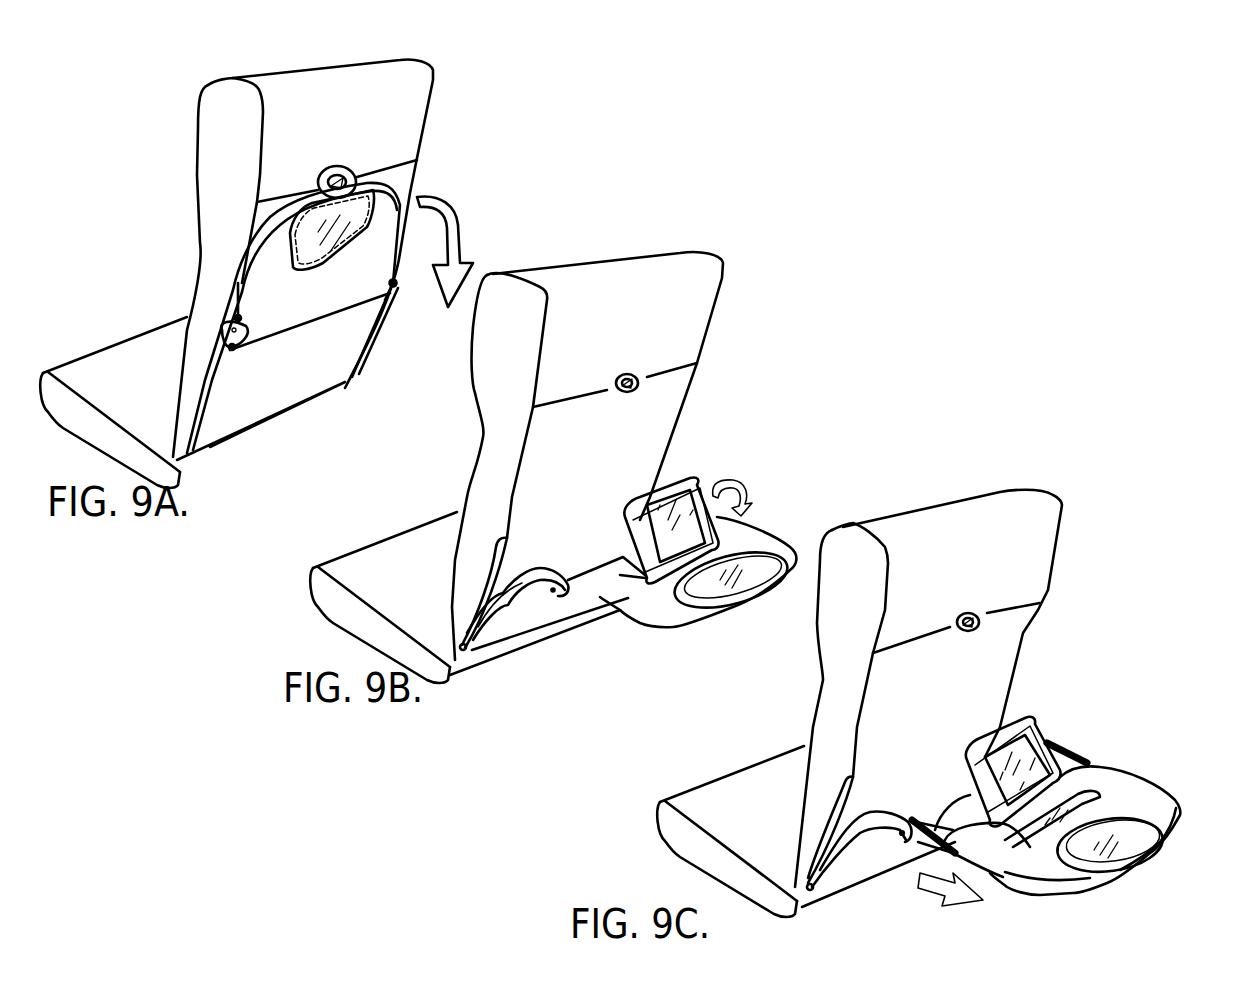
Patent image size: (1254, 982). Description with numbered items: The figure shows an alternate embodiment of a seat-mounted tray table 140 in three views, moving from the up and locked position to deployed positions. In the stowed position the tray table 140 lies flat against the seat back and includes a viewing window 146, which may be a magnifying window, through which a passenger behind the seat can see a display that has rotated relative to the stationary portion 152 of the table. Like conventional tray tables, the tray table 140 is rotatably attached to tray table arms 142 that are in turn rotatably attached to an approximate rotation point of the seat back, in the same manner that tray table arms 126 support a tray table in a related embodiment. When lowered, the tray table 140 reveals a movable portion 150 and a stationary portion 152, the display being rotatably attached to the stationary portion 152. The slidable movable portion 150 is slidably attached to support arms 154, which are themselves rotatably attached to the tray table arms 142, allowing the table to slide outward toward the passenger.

In FIG. 9B, the tray table arms 126 is at (490, 603).
In FIG. 9A, the tray table 140 is at (393, 288).
In FIG. 9B, the tray table 140 is at (693, 568).
In FIG. 9C, the tray table 140 is at (1077, 835).
In FIG. 9A, the tray table arms 142 is at (227, 343).
In FIG. 9C, the tray table arms 142 is at (837, 860).
In FIG. 9A, the viewing window 146 is at (358, 233).
In FIG. 9B, the viewing window 146 is at (717, 570).
In FIG. 9C, the movable portion 150 is at (1133, 793).
In FIG. 9B, the stationary portion 152 is at (625, 562).
In FIG. 9C, the stationary portion 152 is at (1040, 807).
In FIG. 9C, the support arms 154 is at (927, 845).